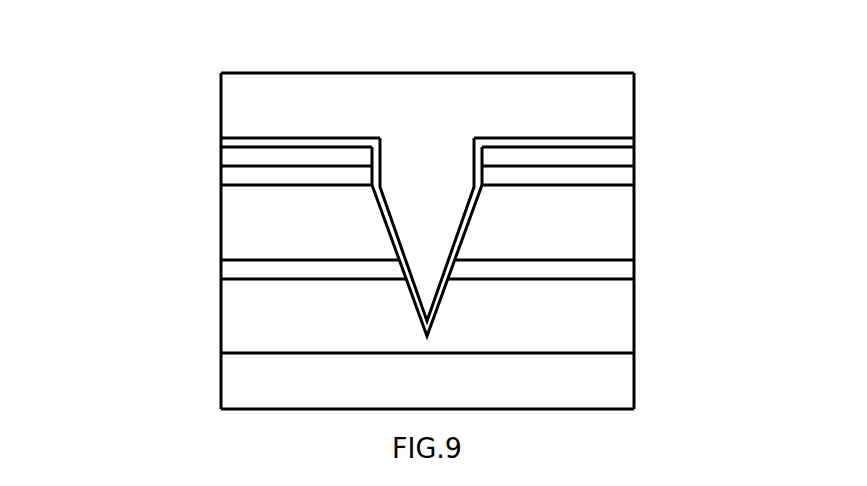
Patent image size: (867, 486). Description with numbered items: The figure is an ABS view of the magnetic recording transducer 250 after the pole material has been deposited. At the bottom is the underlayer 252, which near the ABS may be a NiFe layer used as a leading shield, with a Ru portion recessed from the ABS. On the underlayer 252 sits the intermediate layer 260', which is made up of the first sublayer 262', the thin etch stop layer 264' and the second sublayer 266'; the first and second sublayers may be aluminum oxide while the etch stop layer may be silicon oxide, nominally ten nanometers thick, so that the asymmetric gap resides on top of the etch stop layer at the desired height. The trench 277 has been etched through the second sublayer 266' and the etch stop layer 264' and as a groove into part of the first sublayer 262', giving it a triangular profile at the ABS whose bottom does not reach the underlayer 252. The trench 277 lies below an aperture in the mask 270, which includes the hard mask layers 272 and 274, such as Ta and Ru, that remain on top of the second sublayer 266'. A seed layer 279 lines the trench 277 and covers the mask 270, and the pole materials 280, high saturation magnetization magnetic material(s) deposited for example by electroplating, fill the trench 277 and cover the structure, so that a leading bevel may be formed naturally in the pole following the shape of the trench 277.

The magnetic recording transducer 250 is at (452, 49).
The underlayer 252 is at (427, 387).
The intermediate layer 260' is at (348, 244).
The first sublayer 262' is at (427, 316).
The etch stop layer 264' is at (464, 297).
The second sublayer 266' is at (426, 259).
The mask 270 is at (196, 182).
The first hard mask layer 272 is at (669, 180).
The second hard mask layer 274 is at (672, 153).
The trench 277 is at (395, 152).
The seed layer 279 is at (634, 139).
The pole materials 280 is at (427, 108).